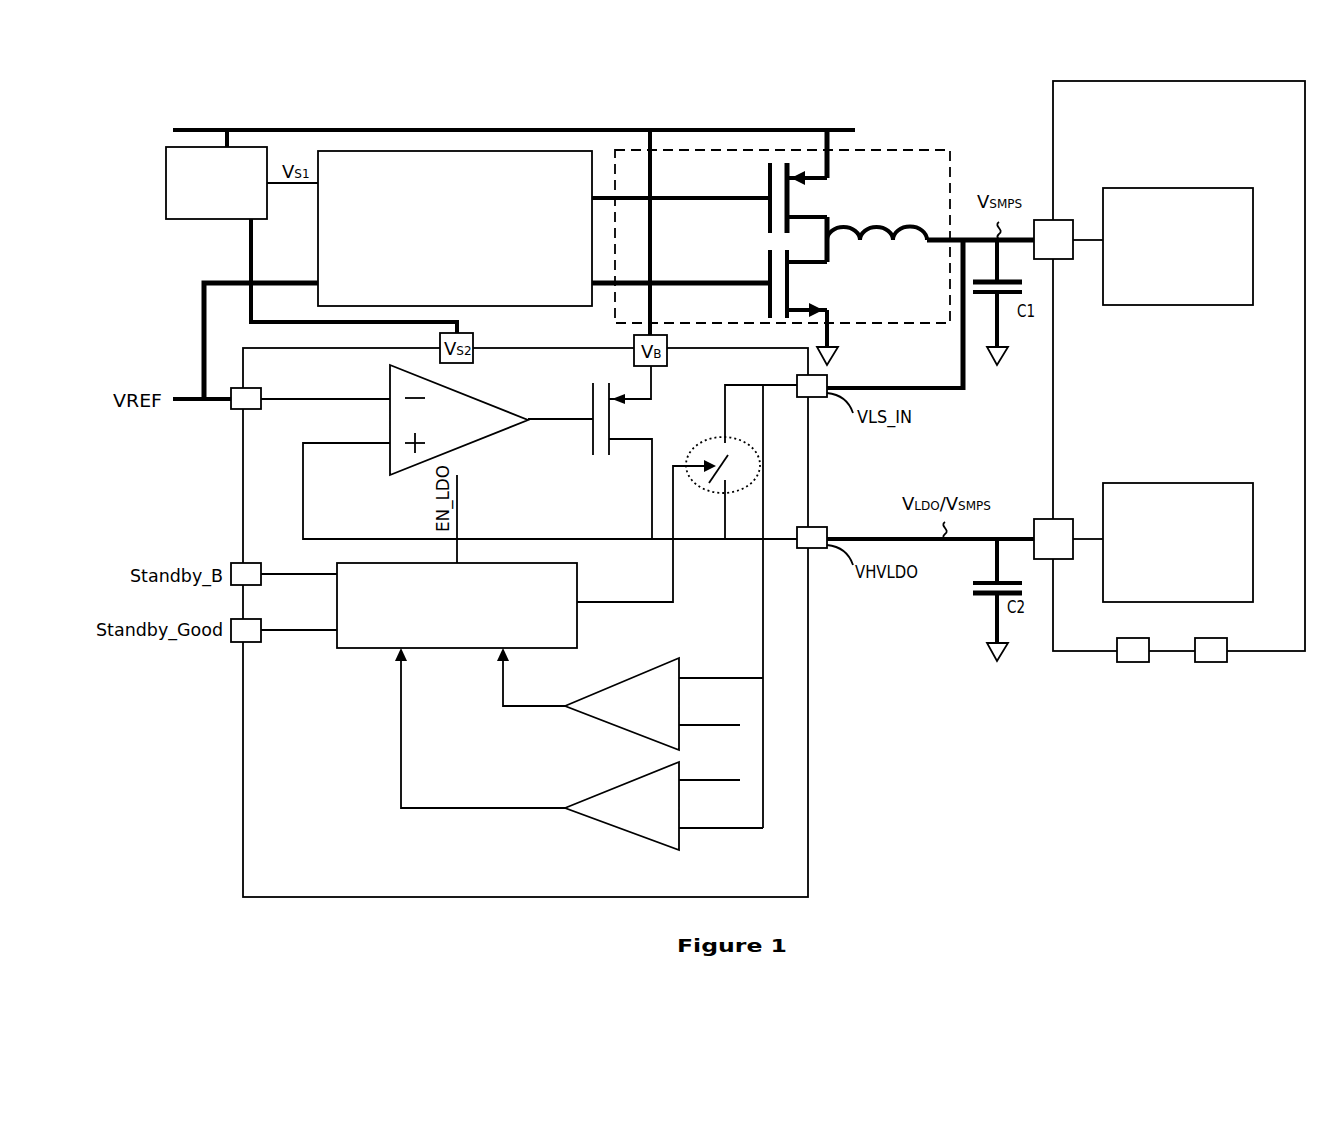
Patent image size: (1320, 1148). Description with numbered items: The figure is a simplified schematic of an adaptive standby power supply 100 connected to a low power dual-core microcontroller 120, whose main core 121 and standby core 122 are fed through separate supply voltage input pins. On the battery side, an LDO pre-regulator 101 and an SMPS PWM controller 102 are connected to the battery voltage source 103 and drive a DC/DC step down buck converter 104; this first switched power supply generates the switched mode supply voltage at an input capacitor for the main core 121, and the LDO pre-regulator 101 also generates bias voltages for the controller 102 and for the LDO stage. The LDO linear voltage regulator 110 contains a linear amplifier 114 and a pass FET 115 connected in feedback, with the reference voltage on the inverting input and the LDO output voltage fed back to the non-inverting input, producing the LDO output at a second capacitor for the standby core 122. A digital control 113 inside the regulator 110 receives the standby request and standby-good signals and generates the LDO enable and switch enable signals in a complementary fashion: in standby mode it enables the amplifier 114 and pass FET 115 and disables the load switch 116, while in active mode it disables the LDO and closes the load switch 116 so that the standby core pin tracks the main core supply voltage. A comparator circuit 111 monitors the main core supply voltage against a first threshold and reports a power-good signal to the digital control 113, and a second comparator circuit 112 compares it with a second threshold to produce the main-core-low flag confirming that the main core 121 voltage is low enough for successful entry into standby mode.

The adaptive standby power supply 100 is at (154, 62).
The LDO pre-regulator 101 is at (216, 183).
The SMPS PWM controller 102 is at (455, 228).
The battery voltage source 103 is at (514, 113).
The DC/DC step down buck converter 104 is at (782, 247).
The LDO linear voltage regulator 110 is at (525, 622).
The voltage monitor or comparator circuit 111 is at (630, 699).
The second voltage monitor or comparator circuit 112 is at (579, 749).
The digital control 113 is at (457, 605).
The linear amplifier 114 is at (459, 420).
The pass FET 115 is at (592, 437).
The load switch 116 is at (760, 462).
The low power dual-core microcontroller 120 is at (1169, 440).
The main core 121 is at (1178, 246).
The standby core 122 is at (1178, 542).